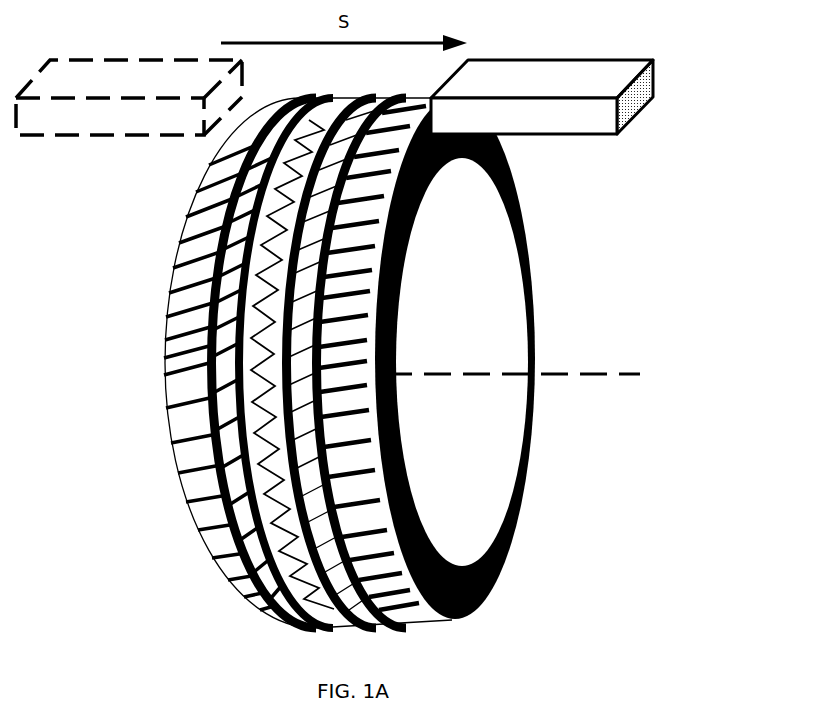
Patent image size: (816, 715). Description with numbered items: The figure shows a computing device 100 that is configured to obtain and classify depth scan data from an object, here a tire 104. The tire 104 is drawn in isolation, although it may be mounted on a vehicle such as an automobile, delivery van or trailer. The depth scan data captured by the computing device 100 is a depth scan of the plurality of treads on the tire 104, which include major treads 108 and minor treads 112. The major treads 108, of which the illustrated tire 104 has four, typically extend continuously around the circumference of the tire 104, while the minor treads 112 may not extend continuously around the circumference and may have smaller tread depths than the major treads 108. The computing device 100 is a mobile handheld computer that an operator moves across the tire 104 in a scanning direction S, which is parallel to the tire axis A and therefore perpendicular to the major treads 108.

The computing device 100 is at (655, 79).
The tire 104 is at (542, 280).
The major treads 108 is at (168, 356).
The minor treads 112 is at (188, 474).